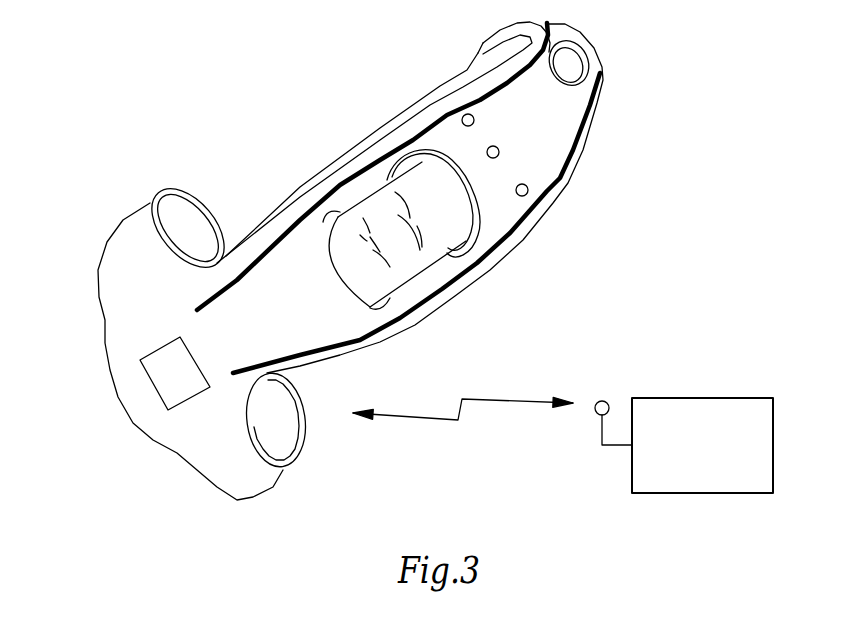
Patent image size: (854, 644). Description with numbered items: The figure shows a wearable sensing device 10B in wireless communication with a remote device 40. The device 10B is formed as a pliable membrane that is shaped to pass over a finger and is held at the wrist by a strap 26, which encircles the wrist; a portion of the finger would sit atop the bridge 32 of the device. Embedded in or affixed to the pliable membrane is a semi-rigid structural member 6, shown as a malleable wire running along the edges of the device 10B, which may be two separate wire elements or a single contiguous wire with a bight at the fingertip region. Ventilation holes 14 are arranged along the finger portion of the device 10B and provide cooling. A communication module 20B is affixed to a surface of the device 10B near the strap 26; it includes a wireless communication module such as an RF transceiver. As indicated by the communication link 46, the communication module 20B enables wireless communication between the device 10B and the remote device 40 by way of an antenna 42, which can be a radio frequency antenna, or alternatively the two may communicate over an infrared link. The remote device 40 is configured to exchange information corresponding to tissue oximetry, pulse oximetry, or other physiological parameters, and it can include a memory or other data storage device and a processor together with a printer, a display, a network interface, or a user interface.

The device 10B is at (408, 110).
The semi-rigid structural member 6 is at (352, 177).
The ventilation holes 14 is at (474, 121).
The strap 26 is at (120, 252).
The communication module 20B is at (157, 387).
The bridge 32 is at (427, 280).
The communication link 46 is at (512, 401).
The antenna 42 is at (602, 401).
The remote device 40 is at (757, 397).